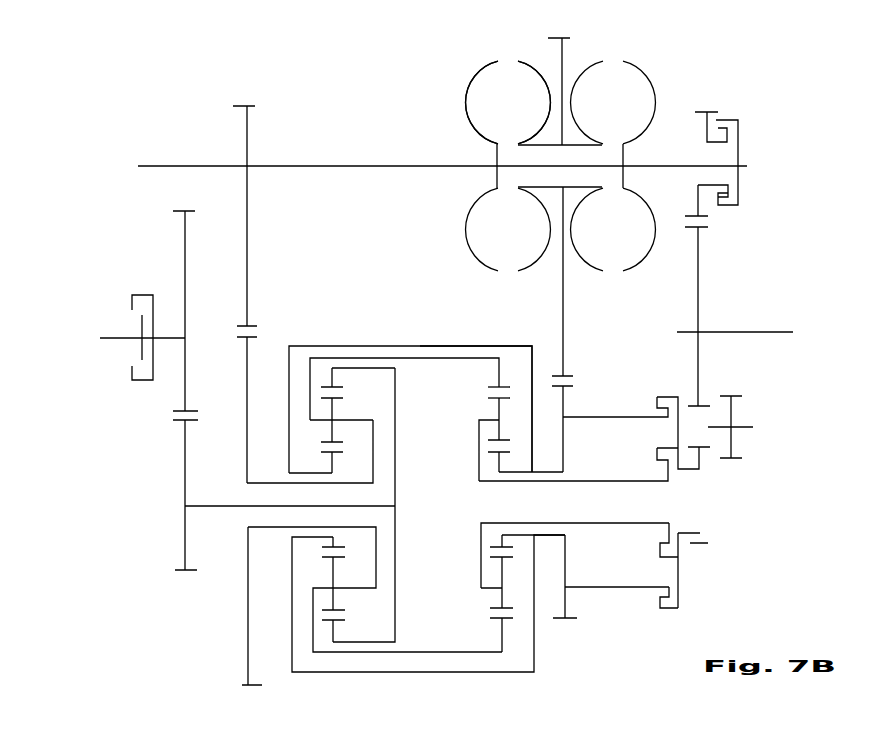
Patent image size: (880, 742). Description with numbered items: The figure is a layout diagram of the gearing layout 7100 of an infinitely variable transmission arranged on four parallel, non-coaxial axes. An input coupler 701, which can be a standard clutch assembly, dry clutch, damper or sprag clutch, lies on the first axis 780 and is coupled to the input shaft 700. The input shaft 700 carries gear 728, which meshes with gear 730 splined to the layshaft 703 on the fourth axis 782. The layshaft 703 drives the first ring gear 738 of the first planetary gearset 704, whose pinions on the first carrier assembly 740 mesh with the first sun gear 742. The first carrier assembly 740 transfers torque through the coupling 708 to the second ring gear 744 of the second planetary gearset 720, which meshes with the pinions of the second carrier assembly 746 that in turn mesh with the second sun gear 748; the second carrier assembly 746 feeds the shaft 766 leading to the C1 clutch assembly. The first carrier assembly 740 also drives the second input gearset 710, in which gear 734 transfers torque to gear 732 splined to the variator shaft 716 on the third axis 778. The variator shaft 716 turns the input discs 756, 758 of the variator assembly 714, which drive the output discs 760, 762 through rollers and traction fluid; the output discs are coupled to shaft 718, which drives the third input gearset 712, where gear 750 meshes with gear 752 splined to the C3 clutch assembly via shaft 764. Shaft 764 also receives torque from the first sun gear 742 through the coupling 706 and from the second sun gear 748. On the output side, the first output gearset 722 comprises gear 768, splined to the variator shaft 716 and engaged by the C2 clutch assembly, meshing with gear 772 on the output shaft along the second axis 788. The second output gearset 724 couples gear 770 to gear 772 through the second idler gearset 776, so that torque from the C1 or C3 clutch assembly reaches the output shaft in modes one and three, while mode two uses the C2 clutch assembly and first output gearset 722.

The layout 7100 is at (170, 82).
The third axis 778 is at (109, 166).
The variator shaft 716 is at (343, 165).
The variator assembly 714 is at (441, 89).
The input disc 756 is at (465, 116).
The output disc 760 is at (547, 88).
The output disc 762 is at (570, 100).
The input disc 758 is at (650, 70).
The shaft 718 is at (597, 177).
The gear 750 is at (564, 318).
The first output gearset 722 is at (713, 88).
The gear 768 is at (706, 128).
The C2 clutch assembly C2 is at (755, 118).
The gear 772 is at (699, 268).
The second axis 788 is at (806, 331).
The second idler gearset 776 is at (733, 440).
The gear 732 is at (248, 217).
The gear 728 is at (183, 243).
The gear 730 is at (185, 535).
The first axis 780 is at (77, 337).
The input shaft 700 is at (175, 340).
The input coupler 701 is at (133, 270).
The fourth axis 782 is at (167, 502).
The layshaft 703 is at (222, 505).
The gear 734 is at (248, 620).
The second input gearset 710 is at (241, 699).
The coupling 706 is at (383, 346).
The coupling 708 is at (447, 346).
The first ring gear 738 is at (360, 358).
The first carrier assembly 740 is at (333, 414).
The first sun gear 742 is at (332, 428).
The second ring gear 744 is at (497, 386).
The second carrier assembly 746 is at (497, 398).
The second sun gear 748 is at (499, 452).
The shaft 764 is at (598, 416).
The C3 clutch assembly C3 is at (670, 425).
The shaft 766 is at (598, 480).
The C1 clutch assembly C1 is at (640, 459).
The first planetary gearset 704 is at (337, 692).
The second planetary gearset 720 is at (510, 687).
The third input gearset 712 is at (564, 639).
The gear 752 is at (566, 550).
The second output gearset 724 is at (708, 570).
The gear 770 is at (703, 537).